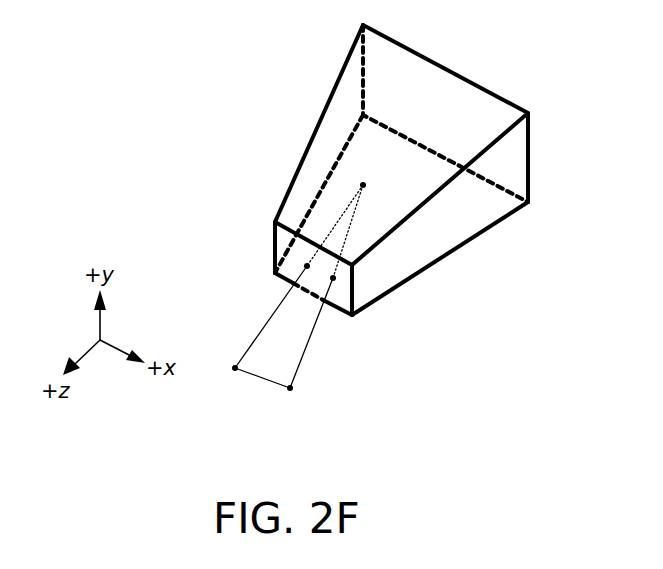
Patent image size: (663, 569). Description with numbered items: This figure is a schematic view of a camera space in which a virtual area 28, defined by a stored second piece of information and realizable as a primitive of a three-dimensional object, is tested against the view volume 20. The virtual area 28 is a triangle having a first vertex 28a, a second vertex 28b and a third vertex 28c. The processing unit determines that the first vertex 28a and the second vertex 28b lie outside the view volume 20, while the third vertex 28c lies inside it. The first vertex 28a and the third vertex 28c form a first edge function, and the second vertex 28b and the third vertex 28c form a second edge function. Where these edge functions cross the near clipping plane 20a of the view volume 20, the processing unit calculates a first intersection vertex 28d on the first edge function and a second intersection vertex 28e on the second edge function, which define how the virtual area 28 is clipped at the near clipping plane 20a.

The view volume 20 is at (334, 87).
The near clipping plane 20a is at (338, 297).
The virtual area 28 is at (255, 340).
The first vertex 28a is at (235, 368).
The second vertex 28b is at (290, 388).
The third vertex 28c is at (364, 185).
The first intersection vertex 28d is at (307, 266).
The second intersection vertex 28e is at (333, 278).